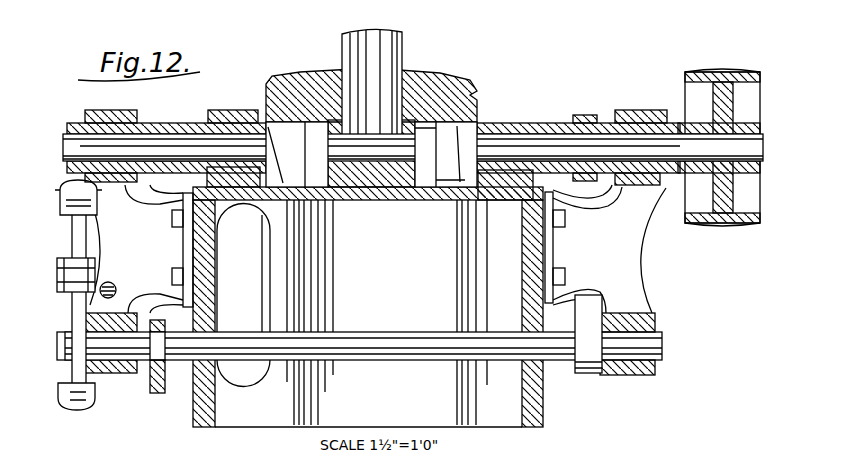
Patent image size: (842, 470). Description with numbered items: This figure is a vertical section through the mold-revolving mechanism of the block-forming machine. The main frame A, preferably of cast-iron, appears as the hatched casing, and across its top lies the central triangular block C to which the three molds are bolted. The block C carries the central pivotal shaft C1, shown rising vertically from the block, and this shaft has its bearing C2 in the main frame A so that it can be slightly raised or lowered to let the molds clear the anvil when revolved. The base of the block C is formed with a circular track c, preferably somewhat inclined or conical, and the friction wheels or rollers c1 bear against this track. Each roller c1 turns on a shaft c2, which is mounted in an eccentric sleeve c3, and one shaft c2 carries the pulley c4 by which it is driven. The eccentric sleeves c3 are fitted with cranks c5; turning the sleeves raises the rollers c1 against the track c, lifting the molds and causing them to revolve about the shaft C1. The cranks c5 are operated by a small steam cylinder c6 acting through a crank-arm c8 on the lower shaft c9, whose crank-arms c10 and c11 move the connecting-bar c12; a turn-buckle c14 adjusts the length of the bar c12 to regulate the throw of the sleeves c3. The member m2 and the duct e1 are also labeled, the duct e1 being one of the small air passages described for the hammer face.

The main frame A is at (504, 206).
The central triangular block C is at (371, 82).
The central pivotal shaft C1 is at (386, 50).
The bearing C2 is at (371, 153).
The circular track c is at (262, 112).
The friction wheel c1 is at (297, 154).
The duct e1 is at (446, 154).
The roller shaft c2 is at (413, 147).
The eccentric sleeve c3 is at (163, 130).
The pulley c4 is at (719, 147).
The crank c5 is at (588, 116).
The steam cylinder c6 is at (72, 186).
The crank-arm c8 is at (168, 356).
The shaft c9 is at (378, 343).
The crank-arm c10 is at (66, 368).
The crank-arm c11 is at (588, 322).
The connecting-bar c12 is at (70, 346).
The turn-buckle c14 is at (68, 288).
The bolt m2 is at (116, 288).